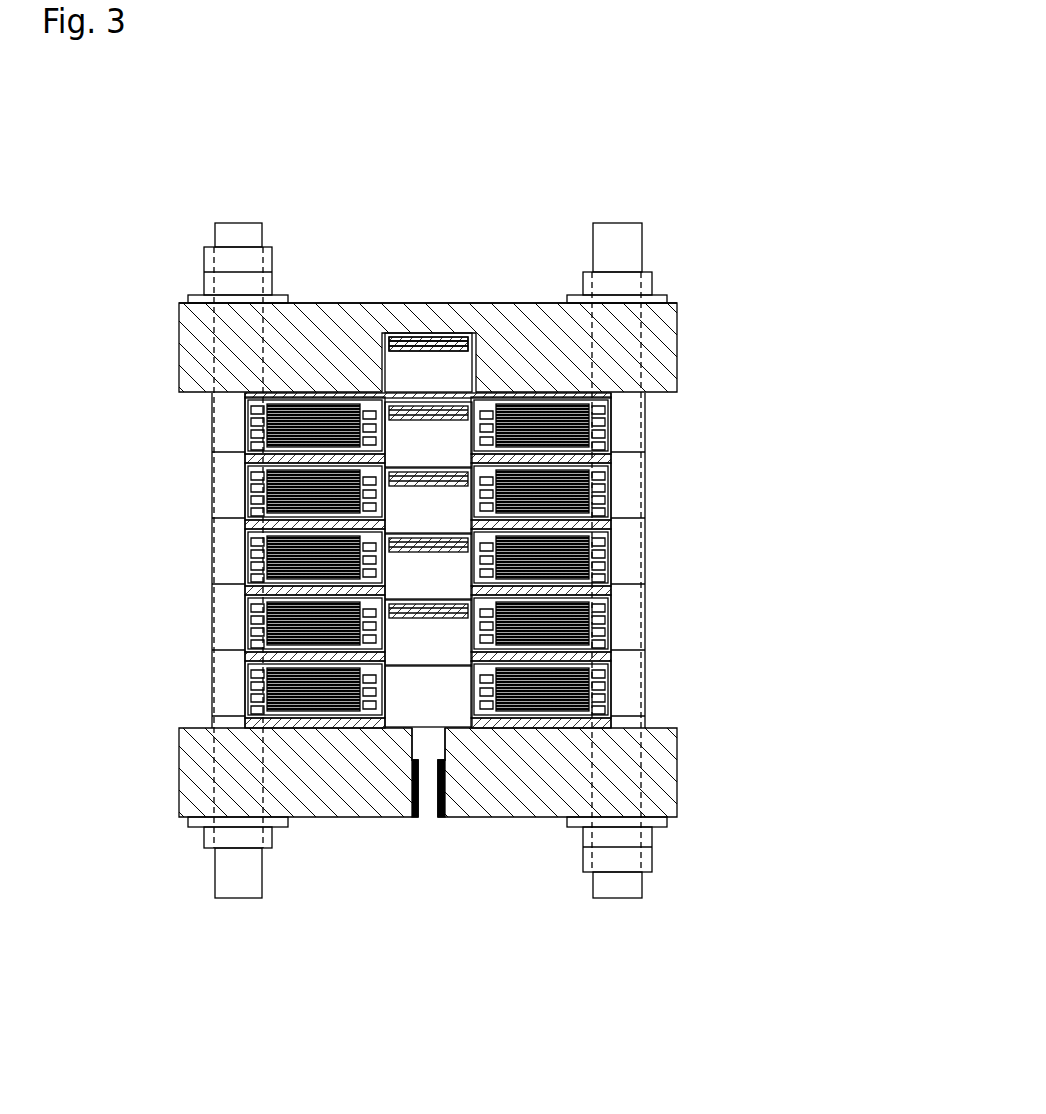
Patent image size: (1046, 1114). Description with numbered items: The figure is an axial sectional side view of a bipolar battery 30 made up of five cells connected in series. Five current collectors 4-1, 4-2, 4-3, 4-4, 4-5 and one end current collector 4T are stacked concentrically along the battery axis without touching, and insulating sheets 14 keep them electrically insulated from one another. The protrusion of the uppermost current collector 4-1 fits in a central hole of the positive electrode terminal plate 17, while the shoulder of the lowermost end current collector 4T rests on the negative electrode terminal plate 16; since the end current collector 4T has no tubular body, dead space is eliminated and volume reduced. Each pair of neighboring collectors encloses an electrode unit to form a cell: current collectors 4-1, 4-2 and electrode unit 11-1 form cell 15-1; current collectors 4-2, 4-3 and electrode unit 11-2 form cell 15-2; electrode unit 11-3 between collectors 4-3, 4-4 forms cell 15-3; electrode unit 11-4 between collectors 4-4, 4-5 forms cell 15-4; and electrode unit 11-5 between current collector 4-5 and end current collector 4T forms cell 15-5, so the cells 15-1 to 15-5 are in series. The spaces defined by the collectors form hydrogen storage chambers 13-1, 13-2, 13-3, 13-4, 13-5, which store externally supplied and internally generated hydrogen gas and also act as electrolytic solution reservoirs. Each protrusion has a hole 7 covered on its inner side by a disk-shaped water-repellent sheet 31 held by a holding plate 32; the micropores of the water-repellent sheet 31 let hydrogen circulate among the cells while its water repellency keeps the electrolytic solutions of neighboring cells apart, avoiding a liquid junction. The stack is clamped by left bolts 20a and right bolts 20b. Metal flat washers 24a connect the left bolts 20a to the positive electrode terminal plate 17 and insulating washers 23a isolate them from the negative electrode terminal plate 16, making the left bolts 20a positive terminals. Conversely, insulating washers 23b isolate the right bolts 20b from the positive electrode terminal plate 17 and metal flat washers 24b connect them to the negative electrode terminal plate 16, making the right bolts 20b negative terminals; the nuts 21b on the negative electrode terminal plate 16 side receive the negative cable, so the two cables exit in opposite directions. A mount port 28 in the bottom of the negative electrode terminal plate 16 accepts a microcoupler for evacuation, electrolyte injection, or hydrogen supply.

The bipolar battery 30 is at (665, 165).
The hole 7 is at (430, 340).
The water-repellent sheet 31 is at (404, 345).
The holding plate 32 is at (455, 345).
The left bolts 20a is at (222, 237).
The metal flat washers 24a is at (200, 297).
The insulating washers 23b is at (658, 297).
The positive electrode terminal plate 17 is at (178, 350).
The negative electrode terminal plate 16 is at (178, 775).
The insulating sheets 14 is at (212, 716).
The insulating washers 23a is at (200, 825).
The mount port 28 is at (428, 808).
The metal flat washers 24b is at (655, 820).
The nuts 21b is at (645, 862).
The right bolts 20b is at (630, 883).
The hydrogen storage chamber 13-1 is at (428, 362).
The hydrogen storage chamber 13-2 is at (428, 434).
The hydrogen storage chamber 13-3 is at (428, 500).
The hydrogen storage chamber 13-4 is at (428, 566).
The hydrogen storage chamber 13-5 is at (428, 632).
The current collector 4-1 is at (648, 395).
The current collector 4-2 is at (648, 455).
The current collector 4-3 is at (648, 521).
The current collector 4-4 is at (648, 587).
The current collector 4-5 is at (648, 653).
The end current collector 4T is at (648, 723).
The electrode unit 11-1 is at (648, 425).
The electrode unit 11-2 is at (648, 490).
The electrode unit 11-3 is at (648, 557).
The electrode unit 11-4 is at (648, 623).
The electrode unit 11-5 is at (648, 690).
The cell 15-1 is at (608, 400).
The cell 15-2 is at (608, 476).
The cell 15-3 is at (608, 561).
The cell 15-4 is at (608, 642).
The cell 15-5 is at (608, 718).